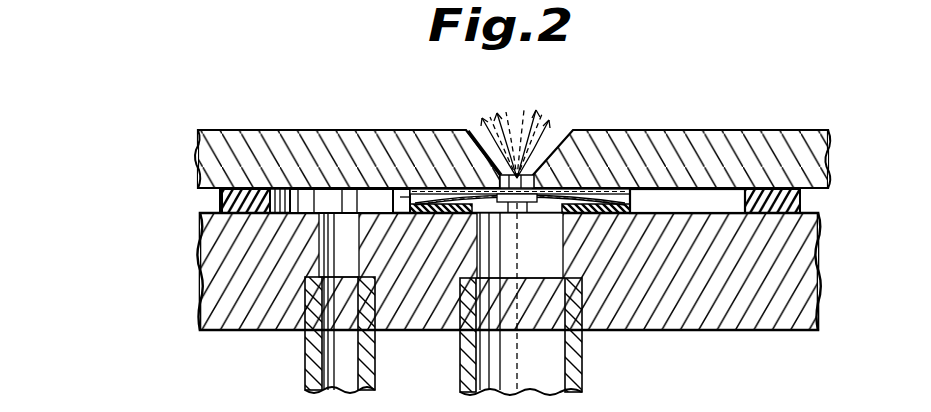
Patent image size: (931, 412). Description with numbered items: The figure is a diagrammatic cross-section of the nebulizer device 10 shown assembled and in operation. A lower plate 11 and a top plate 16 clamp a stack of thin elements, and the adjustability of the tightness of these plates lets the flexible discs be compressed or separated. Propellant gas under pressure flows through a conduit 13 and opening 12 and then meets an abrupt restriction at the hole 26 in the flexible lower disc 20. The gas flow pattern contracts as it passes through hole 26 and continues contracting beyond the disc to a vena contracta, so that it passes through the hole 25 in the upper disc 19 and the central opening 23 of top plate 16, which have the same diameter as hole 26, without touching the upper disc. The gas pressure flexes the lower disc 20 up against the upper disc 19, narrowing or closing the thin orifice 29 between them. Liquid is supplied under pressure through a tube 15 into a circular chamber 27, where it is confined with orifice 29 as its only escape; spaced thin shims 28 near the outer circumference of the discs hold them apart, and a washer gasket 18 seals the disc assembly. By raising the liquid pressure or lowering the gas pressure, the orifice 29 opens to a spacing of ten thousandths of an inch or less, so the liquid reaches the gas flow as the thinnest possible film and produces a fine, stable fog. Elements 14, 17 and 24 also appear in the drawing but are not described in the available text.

The spray nozzle assembly 10 is at (718, 114).
The plate 11 is at (726, 318).
The opening 12 is at (540, 262).
The conduit 13 is at (573, 378).
The actuating stem 14 is at (347, 214).
The tube 15 is at (308, 355).
The top plate 16 is at (797, 133).
The side recess 17 is at (220, 200).
The washer gasket 18 is at (433, 219).
The upper disc 19 is at (428, 191).
The lower disc 20 is at (618, 196).
The central opening 23 is at (535, 182).
The leaf spring diaphragm 24 is at (506, 204).
The hole 25 is at (516, 178).
The hole 26 is at (517, 186).
The circular chamber 27 is at (301, 201).
The thin shims 28 is at (393, 196).
The orifice 29 is at (450, 190).